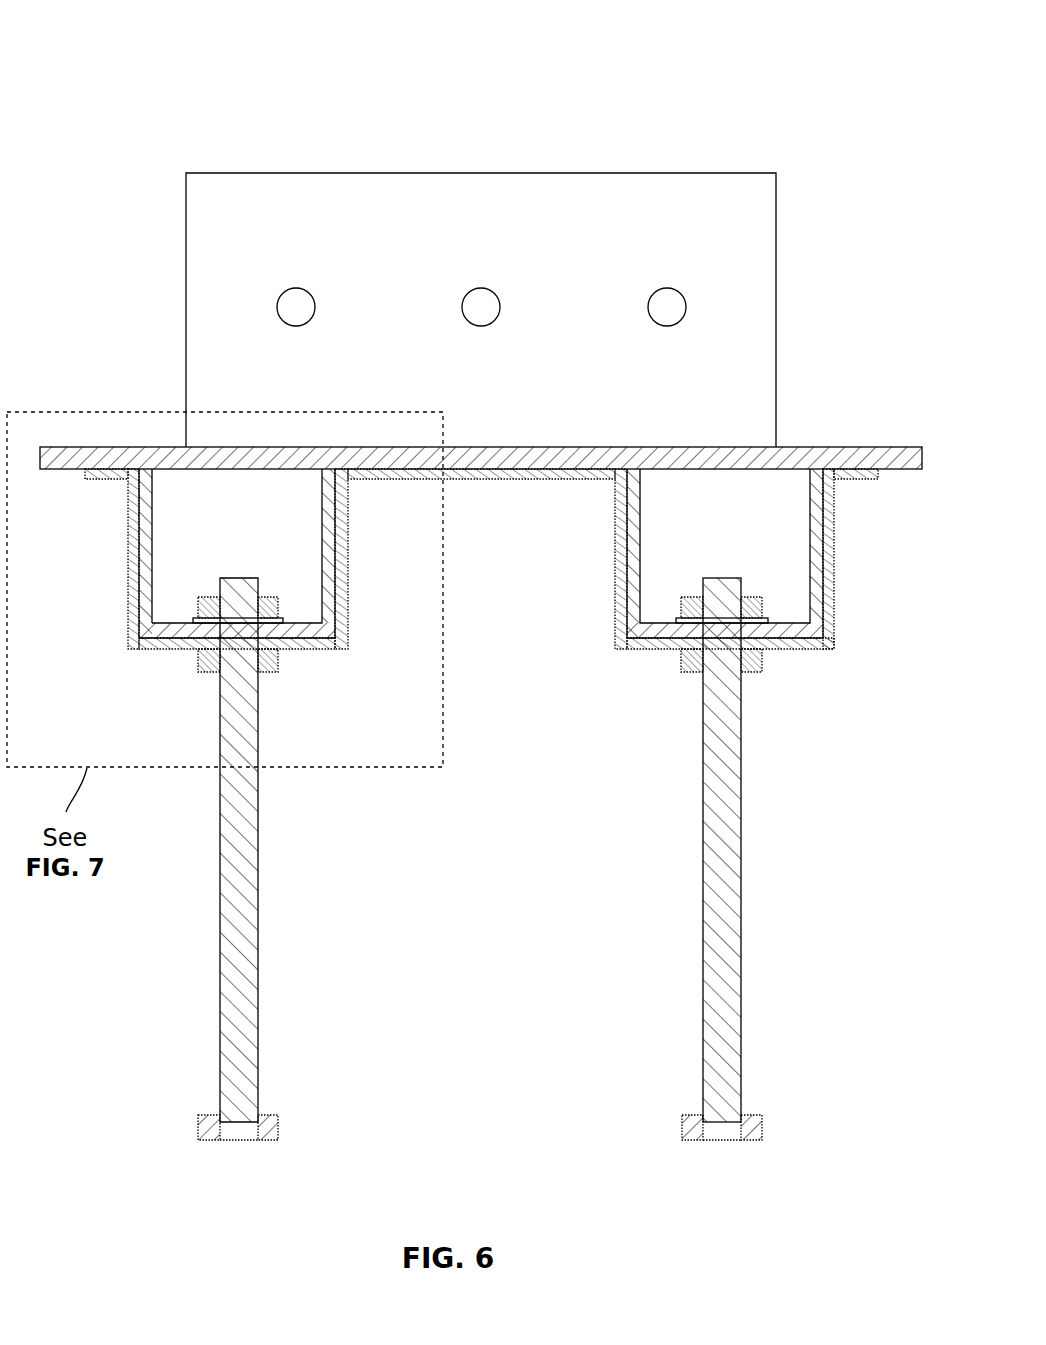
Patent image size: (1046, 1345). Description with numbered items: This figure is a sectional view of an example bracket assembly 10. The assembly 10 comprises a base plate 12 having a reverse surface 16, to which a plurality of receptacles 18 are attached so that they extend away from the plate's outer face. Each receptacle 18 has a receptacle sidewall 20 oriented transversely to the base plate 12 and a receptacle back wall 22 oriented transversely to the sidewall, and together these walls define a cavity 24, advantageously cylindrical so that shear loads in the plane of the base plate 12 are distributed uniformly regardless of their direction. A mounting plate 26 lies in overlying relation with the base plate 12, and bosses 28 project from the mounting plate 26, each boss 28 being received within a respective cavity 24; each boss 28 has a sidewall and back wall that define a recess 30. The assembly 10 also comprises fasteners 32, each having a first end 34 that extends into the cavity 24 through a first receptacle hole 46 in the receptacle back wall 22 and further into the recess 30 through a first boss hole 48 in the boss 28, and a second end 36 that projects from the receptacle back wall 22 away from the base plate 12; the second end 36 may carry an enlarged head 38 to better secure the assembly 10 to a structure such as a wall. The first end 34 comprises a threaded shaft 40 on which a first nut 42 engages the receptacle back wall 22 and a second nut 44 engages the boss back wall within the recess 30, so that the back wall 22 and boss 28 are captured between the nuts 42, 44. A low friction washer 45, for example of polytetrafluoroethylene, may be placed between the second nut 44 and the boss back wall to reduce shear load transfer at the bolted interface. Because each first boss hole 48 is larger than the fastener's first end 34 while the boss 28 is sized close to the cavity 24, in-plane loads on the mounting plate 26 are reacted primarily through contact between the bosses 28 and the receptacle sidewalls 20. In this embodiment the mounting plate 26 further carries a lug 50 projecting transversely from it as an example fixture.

The bracket assembly 10 is at (116, 54).
The base plate 12 is at (112, 482).
The reverse surface 16 is at (460, 475).
The receptacle 18 is at (131, 537).
The receptacle sidewall 20 is at (129, 603).
The receptacle back wall 22 is at (157, 650).
The cavity 24 is at (340, 640).
The mounting plate 26 is at (862, 447).
The boss 28 is at (615, 560).
The recess 30 is at (795, 468).
The fastener 32 is at (259, 995).
The first end 34 is at (240, 580).
The second end 36 is at (220, 1082).
The enlarged head 38 is at (283, 1125).
The threaded shaft 40 is at (249, 676).
The first nut 42 is at (197, 672).
The second nut 44 is at (198, 603).
The low friction washer 45 is at (272, 618).
The first receptacle hole 46 is at (690, 652).
The first boss hole 48 is at (752, 652).
The lug 50 is at (558, 262).